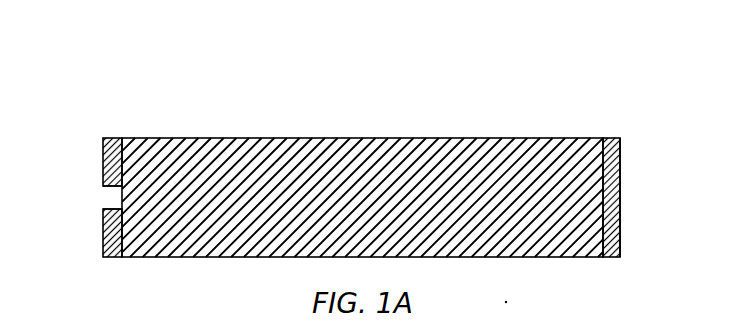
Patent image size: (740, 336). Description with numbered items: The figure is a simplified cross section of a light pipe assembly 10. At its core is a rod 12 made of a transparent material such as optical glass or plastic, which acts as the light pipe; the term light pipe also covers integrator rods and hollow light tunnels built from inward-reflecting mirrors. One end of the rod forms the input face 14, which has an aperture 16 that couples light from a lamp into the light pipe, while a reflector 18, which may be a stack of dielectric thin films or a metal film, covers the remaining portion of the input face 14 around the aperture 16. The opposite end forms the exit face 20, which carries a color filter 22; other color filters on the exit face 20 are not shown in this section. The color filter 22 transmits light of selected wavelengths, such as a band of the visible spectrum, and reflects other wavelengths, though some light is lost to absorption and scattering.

The light pipe assembly 10 is at (352, 150).
The rod 12 is at (224, 137).
The input face 14 is at (82, 232).
The aperture 16 is at (105, 197).
The reflector 18 is at (113, 137).
The exit face 20 is at (621, 196).
The color filter 22 is at (610, 137).